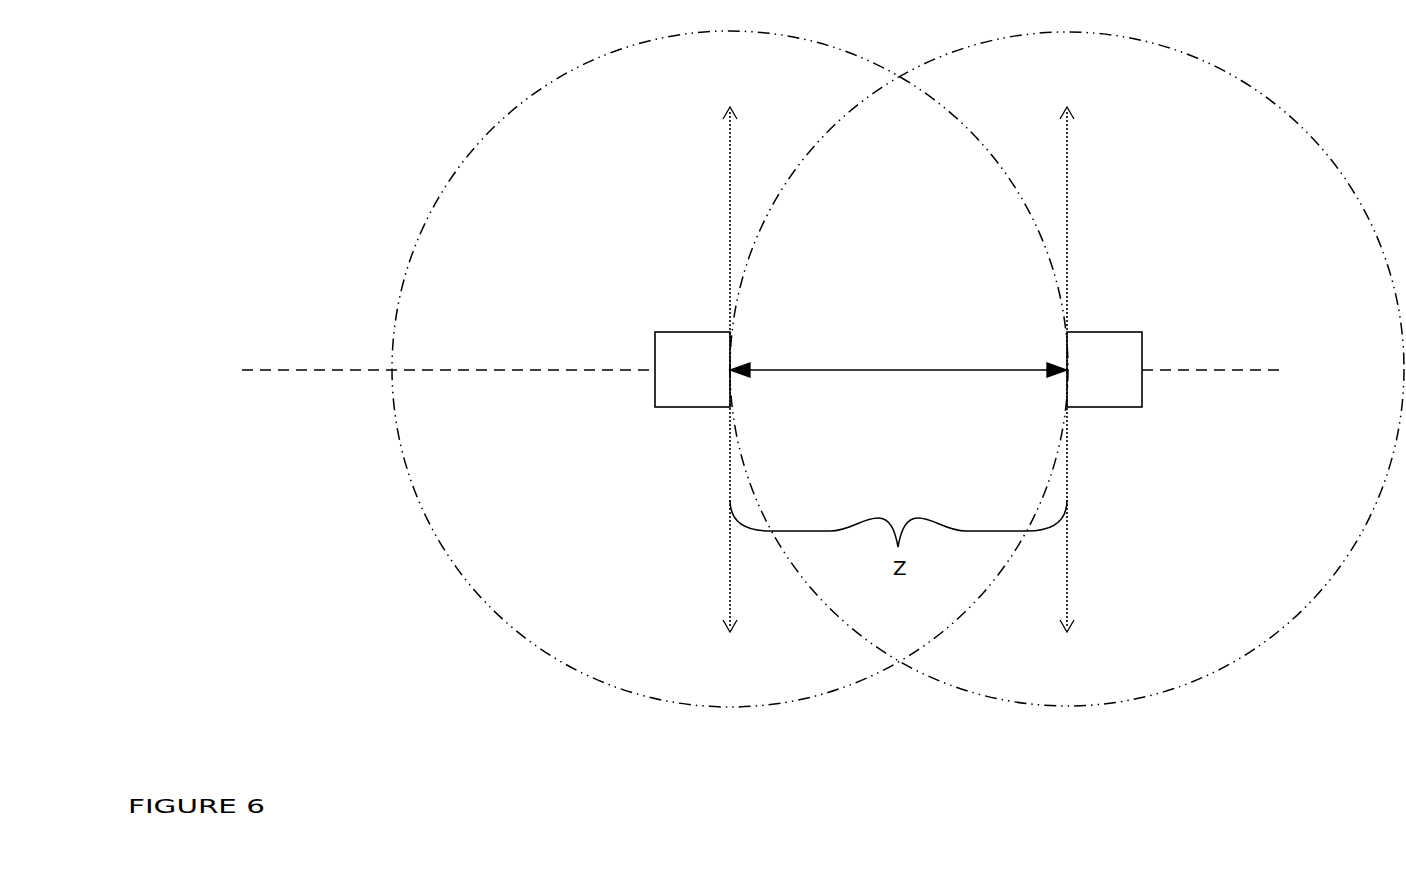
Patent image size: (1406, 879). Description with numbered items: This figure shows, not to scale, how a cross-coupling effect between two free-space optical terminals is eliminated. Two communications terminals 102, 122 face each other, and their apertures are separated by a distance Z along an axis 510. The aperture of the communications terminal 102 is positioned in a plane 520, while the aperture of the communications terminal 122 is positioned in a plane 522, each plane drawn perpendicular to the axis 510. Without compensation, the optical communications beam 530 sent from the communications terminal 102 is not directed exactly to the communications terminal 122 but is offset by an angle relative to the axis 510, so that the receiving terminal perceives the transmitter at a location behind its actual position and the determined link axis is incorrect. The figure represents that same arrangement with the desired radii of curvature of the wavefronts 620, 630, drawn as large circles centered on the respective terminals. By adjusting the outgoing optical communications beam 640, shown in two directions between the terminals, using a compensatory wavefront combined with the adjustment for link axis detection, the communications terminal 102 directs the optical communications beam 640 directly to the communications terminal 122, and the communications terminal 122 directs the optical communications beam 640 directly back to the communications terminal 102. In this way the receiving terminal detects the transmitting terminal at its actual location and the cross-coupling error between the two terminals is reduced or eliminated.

The wavefront 630 is at (447, 178).
The wavefront 620 is at (1348, 180).
The axis 510 is at (440, 370).
The optical communications beam 530 is at (1185, 325).
The communications terminal 102 is at (655, 335).
The communications terminal 122 is at (1142, 358).
The plane 520 is at (730, 278).
The plane 522 is at (1067, 275).
The optical communications beam 640 is at (881, 370).